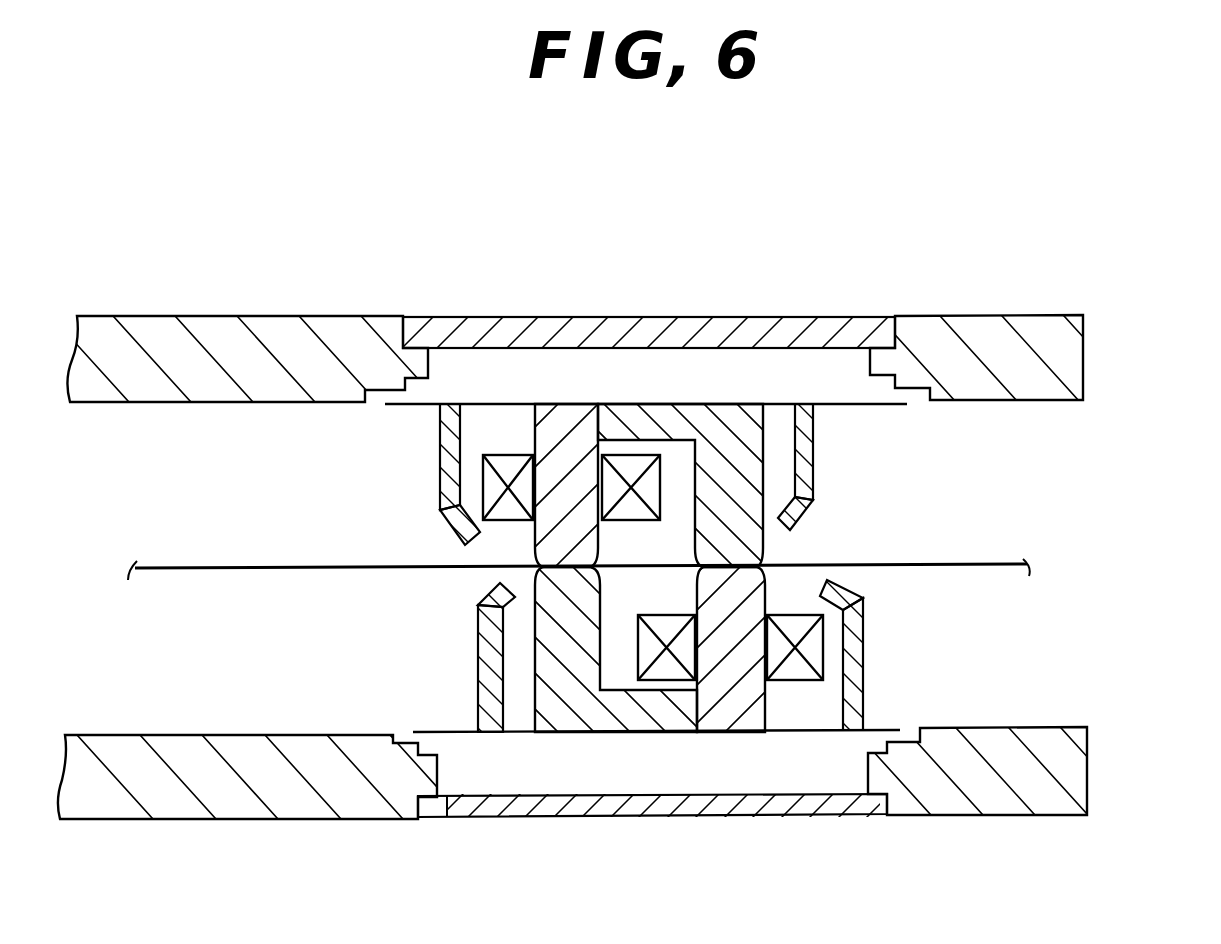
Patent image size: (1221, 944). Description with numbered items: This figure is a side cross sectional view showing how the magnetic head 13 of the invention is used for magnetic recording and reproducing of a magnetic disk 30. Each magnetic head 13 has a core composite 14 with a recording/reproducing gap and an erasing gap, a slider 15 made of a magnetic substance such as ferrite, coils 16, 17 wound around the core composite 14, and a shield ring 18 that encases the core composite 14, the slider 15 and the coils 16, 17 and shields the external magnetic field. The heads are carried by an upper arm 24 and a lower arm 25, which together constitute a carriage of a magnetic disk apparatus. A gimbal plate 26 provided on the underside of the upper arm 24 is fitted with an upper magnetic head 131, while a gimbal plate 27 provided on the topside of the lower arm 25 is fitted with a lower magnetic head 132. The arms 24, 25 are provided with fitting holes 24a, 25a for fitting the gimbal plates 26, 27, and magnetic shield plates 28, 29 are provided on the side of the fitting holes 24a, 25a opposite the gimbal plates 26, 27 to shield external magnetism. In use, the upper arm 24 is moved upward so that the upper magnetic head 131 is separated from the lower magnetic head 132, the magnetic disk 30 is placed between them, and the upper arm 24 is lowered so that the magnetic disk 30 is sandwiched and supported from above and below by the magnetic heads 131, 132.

The magnetic head 13 is at (627, 570).
The upper magnetic head 131 is at (768, 467).
The lower magnetic head 132 is at (530, 651).
The core composite 14 is at (567, 410).
The slider 15 is at (750, 415).
The coil 16 is at (600, 697).
The coil 17 is at (968, 605).
The shield ring 18 is at (631, 649).
The upper arm 24 is at (617, 403).
The fitting hole 24a is at (838, 405).
The lower arm 25 is at (638, 722).
The fitting hole 25a is at (868, 723).
The gimbal plate 26 is at (870, 358).
The gimbal plate 27 is at (865, 795).
The magnetic shield plate 28 is at (642, 316).
The magnetic shield plate 29 is at (612, 818).
The magnetic disk 30 is at (985, 562).